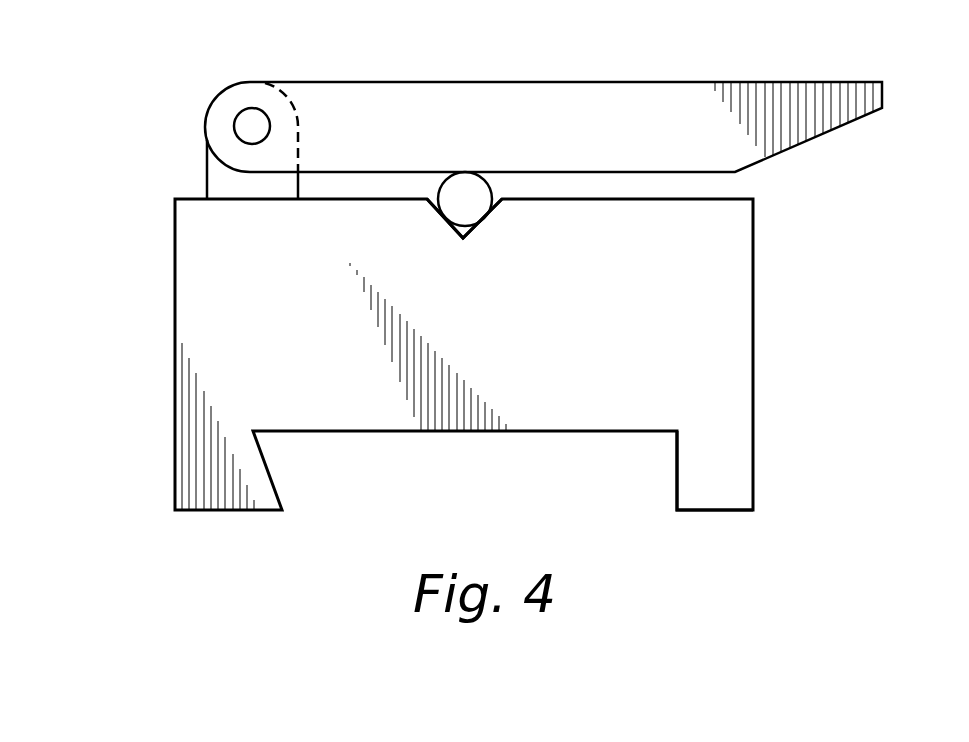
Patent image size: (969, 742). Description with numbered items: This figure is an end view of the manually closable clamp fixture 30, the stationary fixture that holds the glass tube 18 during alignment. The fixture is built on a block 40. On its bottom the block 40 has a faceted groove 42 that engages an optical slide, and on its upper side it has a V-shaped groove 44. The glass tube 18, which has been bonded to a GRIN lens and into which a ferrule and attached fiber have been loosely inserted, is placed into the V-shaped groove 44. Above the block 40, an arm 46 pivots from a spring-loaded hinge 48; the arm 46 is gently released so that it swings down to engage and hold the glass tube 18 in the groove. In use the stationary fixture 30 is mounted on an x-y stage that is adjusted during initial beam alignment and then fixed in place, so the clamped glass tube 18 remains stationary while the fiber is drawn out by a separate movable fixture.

The glass tube 18 is at (465, 180).
The stationary fixture 30 is at (108, 458).
The block 40 is at (753, 268).
The faceted groove 42 is at (677, 475).
The V-shaped groove 44 is at (483, 214).
The arm 46 is at (610, 82).
The spring-loaded hinge 48 is at (233, 100).